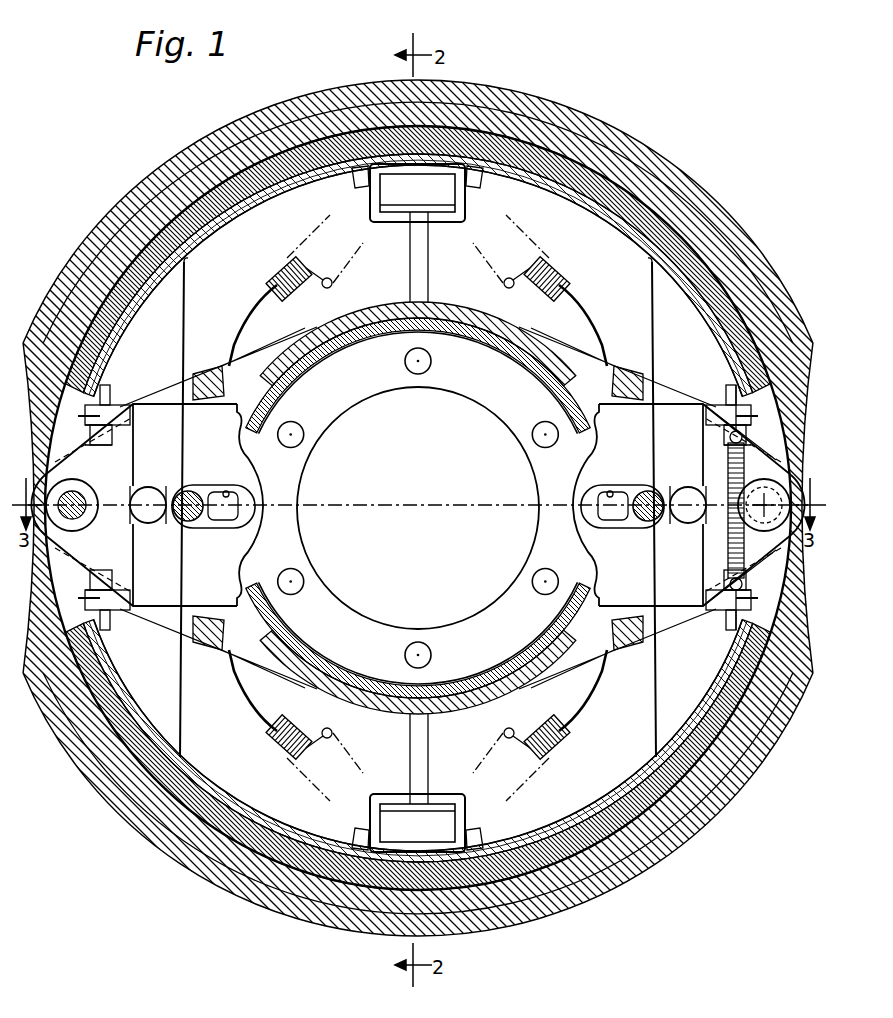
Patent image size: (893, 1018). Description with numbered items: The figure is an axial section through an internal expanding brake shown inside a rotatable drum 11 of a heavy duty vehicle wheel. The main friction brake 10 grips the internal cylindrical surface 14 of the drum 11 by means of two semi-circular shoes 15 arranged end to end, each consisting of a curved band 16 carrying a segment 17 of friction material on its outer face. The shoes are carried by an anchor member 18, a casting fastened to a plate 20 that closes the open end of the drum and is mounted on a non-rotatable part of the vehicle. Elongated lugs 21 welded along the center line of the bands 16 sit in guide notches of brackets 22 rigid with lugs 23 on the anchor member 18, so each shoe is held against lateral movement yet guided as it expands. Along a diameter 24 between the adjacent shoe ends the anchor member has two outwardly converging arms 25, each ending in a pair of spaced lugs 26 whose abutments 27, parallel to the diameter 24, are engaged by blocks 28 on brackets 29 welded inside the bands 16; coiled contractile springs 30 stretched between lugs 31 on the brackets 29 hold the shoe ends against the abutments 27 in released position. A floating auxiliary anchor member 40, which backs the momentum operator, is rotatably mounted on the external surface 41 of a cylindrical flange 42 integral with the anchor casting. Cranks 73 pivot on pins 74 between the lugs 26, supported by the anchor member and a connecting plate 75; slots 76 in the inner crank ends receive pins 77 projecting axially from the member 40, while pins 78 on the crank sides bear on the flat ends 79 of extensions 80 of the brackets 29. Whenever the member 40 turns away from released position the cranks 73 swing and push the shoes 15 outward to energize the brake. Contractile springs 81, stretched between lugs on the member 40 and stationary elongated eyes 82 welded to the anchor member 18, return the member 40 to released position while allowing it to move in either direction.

The main friction brake 10 is at (100, 208).
The drum 11 is at (175, 190).
The internal cylindrical surface 14 is at (278, 170).
The semi-circular shoes 15 is at (220, 212).
The curved band 16 is at (208, 226).
The segment of friction material 17 is at (298, 168).
The anchor member 18 is at (467, 705).
The plate 20 is at (376, 388).
The elongated lugs 21 is at (358, 182).
The brackets 22 is at (466, 186).
The lugs 23 is at (430, 216).
The diameter 24 is at (446, 500).
The outwardly converging arms 25 is at (205, 375).
The spaced lugs 26 is at (82, 430).
The abutments 27 is at (84, 412).
The blocks 28 is at (104, 394).
The brackets 29 is at (176, 292).
The coiled contractile springs 30 is at (730, 465).
The lugs 31 is at (742, 586).
The member 40 is at (566, 390).
The external surface 41 is at (540, 362).
The cylindrical flange 42 is at (516, 340).
The cranks 73 is at (242, 526).
The pins 74 is at (88, 490).
The plate 75 is at (765, 455).
The slots 76 is at (232, 494).
The pins 77 is at (188, 522).
The pins 78 is at (132, 505).
The flat ends 79 is at (132, 494).
The extensions 80 is at (172, 440).
The contractile springs 81 is at (338, 268).
The elongated eyes 82 is at (258, 320).